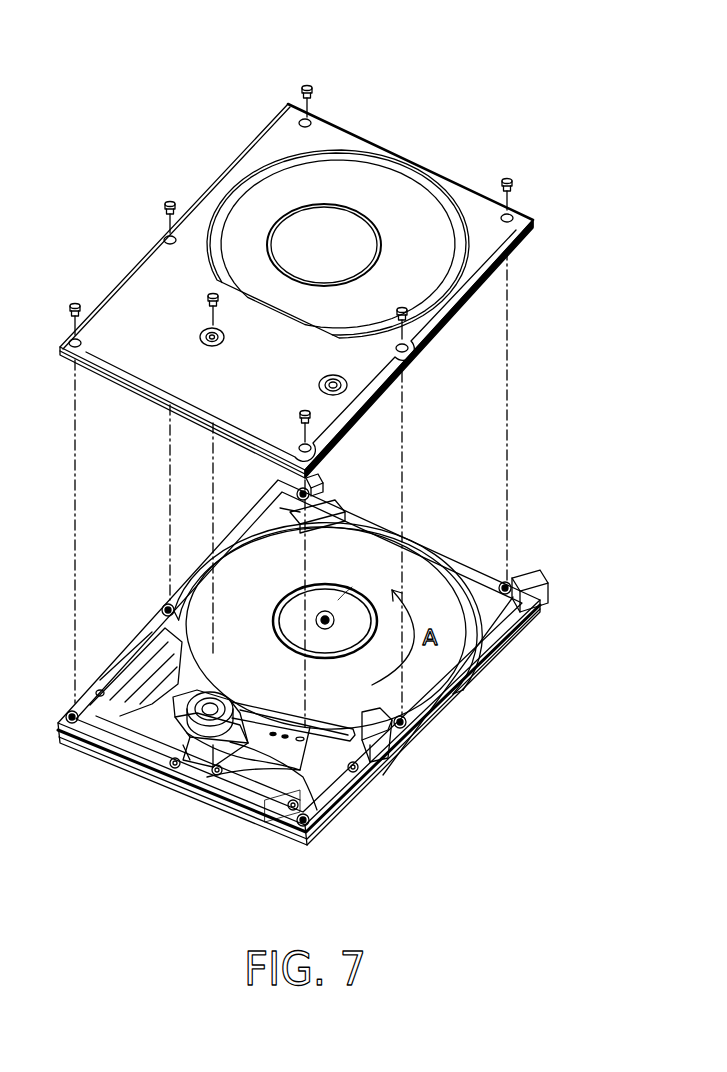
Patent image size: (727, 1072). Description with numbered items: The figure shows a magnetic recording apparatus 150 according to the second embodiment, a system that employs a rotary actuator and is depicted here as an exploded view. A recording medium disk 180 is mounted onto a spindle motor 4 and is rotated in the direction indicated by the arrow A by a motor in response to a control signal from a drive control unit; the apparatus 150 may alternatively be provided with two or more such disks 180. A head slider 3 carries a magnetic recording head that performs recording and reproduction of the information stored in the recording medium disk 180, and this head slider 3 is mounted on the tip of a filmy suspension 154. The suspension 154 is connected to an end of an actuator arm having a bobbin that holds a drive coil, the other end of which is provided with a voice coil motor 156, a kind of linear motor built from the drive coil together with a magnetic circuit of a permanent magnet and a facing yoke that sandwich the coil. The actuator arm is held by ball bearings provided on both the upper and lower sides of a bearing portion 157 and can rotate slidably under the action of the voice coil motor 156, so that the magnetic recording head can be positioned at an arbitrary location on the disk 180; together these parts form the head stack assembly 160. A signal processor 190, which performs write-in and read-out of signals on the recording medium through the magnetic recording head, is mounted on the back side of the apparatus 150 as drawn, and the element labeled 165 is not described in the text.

The magnetic recording apparatus 150 is at (470, 103).
The suspension 154 is at (240, 820).
The recording medium disk 180 is at (362, 562).
The spindle motor 4 is at (352, 587).
The head slider 3 is at (338, 733).
The head stack assembly 160 is at (272, 723).
The bearing portion 157 is at (130, 767).
The voice coil motor 156 is at (153, 777).
The flexible printed circuit 165 is at (192, 803).
The signal processor 190 is at (276, 803).